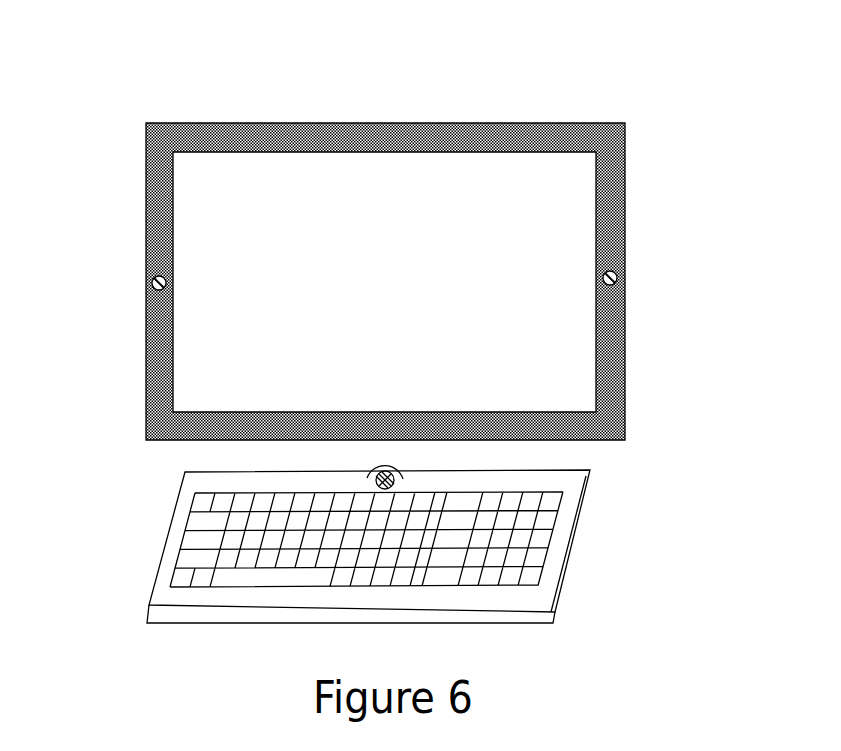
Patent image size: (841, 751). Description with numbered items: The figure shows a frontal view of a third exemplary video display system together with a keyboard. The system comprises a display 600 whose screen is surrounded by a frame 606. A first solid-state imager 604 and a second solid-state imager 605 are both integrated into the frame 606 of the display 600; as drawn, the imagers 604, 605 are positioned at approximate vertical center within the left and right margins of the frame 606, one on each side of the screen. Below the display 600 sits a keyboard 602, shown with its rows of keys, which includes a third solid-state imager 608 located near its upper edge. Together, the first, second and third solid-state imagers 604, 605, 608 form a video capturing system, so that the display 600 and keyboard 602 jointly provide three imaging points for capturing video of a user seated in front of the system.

The display 600 is at (615, 90).
The keyboard 602 is at (563, 540).
The first solid-state imager 604 is at (151, 282).
The second solid-state imager 605 is at (618, 277).
The frame 606 is at (407, 122).
The third solid-state imager 608 is at (395, 461).